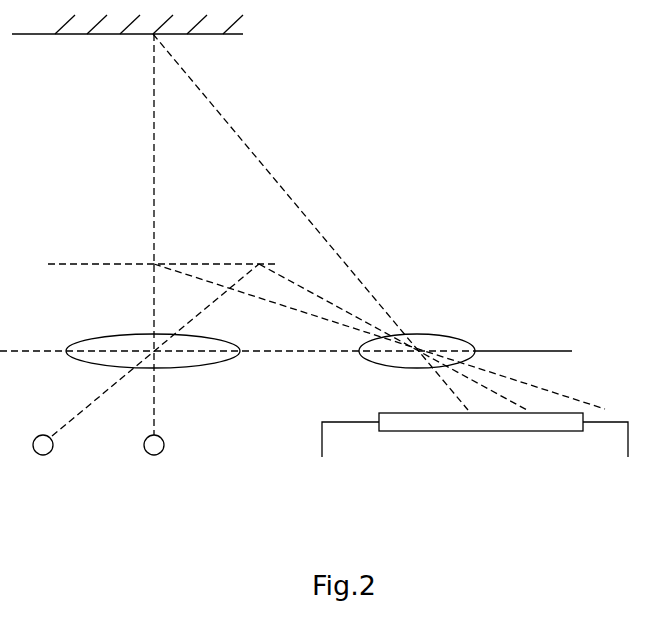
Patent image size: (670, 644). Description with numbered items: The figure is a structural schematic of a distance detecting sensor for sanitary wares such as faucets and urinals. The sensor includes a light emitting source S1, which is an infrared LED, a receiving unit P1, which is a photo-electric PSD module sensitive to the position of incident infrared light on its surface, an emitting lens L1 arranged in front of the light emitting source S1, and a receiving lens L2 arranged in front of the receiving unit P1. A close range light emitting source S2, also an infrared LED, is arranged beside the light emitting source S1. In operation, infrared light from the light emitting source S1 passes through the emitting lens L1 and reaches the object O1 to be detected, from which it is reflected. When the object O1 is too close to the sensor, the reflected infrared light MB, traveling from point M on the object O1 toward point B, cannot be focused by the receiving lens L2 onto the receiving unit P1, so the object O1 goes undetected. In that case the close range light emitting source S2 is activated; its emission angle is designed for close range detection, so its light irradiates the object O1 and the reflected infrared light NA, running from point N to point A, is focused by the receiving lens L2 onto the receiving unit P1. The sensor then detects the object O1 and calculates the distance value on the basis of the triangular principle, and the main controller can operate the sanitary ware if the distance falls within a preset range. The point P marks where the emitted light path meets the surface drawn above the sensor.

The point on projection surface P is at (240, 212).
The object O1 is at (151, 253).
The point M on object plane M is at (367, 326).
The point N on object plane N is at (387, 326).
The emitting lens L1 is at (132, 344).
The receiving lens L2 is at (422, 343).
The image point A is at (536, 400).
The image point B is at (609, 400).
The receiving unit P1 is at (475, 435).
The light emitting source S1 is at (161, 256).
The close range light emitting source S2 is at (146, 368).